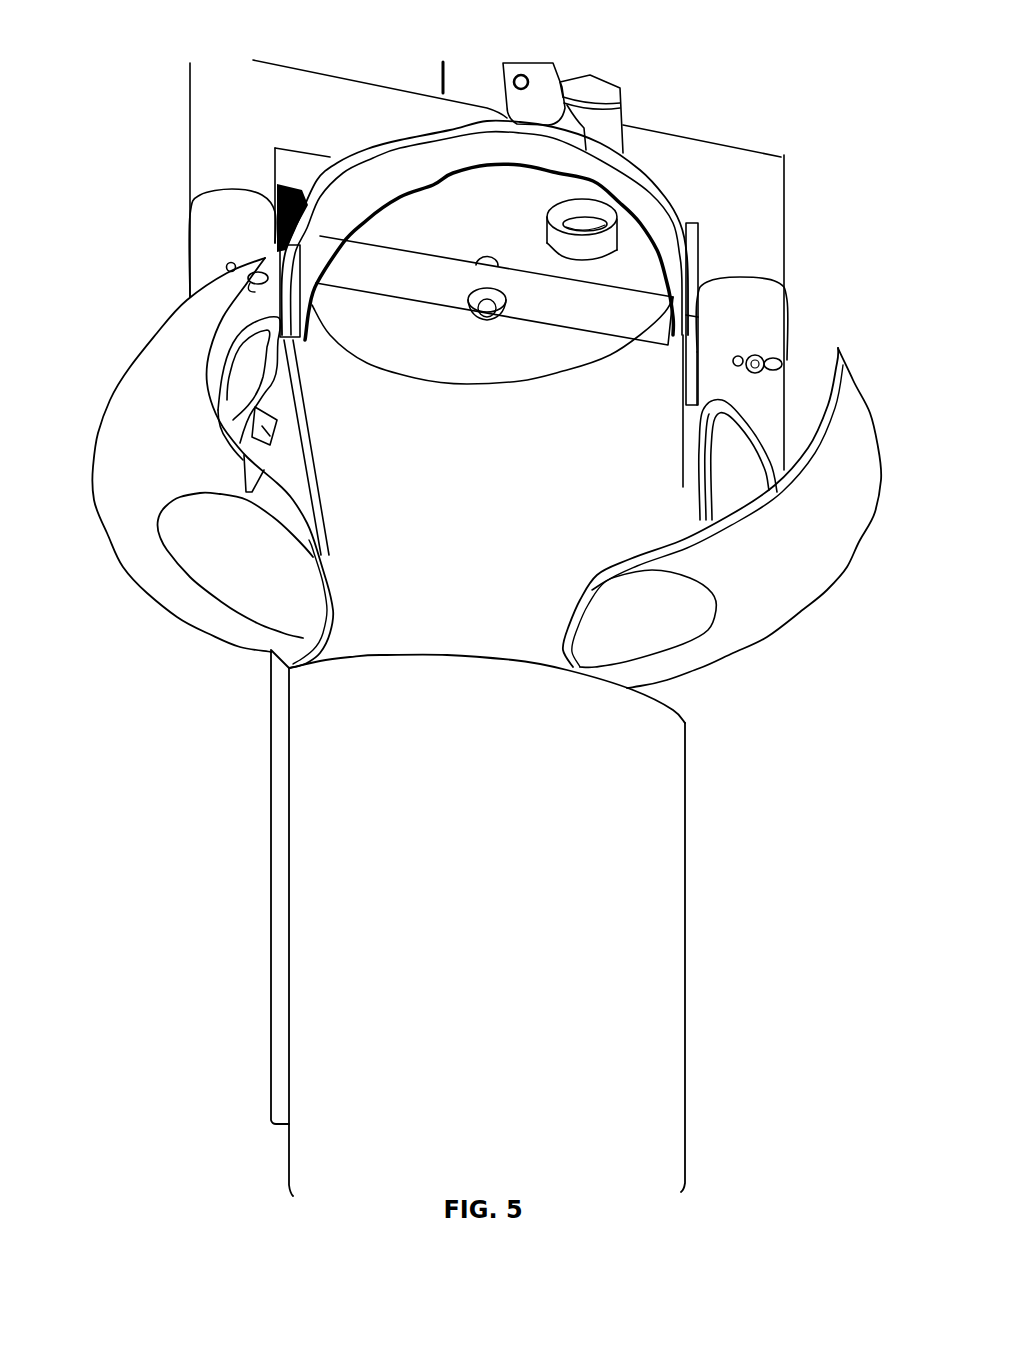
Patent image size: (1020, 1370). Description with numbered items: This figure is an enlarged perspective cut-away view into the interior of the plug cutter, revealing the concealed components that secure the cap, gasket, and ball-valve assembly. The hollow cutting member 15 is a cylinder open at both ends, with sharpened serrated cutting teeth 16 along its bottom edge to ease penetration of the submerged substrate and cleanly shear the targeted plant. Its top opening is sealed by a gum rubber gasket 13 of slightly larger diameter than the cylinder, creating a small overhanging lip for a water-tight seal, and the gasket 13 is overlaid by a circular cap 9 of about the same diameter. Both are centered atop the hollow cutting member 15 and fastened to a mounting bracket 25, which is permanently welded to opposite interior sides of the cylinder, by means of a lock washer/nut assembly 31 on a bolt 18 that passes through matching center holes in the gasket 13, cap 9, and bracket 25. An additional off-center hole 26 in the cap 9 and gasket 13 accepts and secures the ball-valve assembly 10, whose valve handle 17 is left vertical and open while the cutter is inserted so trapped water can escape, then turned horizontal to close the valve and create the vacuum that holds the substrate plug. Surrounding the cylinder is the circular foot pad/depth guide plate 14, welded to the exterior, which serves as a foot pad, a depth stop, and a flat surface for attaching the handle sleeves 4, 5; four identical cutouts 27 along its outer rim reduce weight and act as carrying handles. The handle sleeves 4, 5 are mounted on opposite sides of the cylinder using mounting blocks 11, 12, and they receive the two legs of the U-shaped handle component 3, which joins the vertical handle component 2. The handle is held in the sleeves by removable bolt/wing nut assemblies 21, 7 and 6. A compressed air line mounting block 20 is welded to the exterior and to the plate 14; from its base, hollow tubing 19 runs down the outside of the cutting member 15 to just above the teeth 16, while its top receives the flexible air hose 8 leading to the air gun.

The handle component 2 is at (468, 77).
The U-shaped handle component 3 is at (223, 160).
The handle sleeve 4 is at (770, 310).
The handle sleeve 5 is at (203, 212).
The bolt/wing nut assembly 6 is at (833, 407).
The bolt/wing nut assembly 7 is at (229, 266).
The flexible air hose 8 is at (282, 365).
The circular cap 9 is at (643, 170).
The ball-valve assembly 10 is at (607, 133).
The mounting block 11 is at (290, 277).
The mounting block 12 is at (693, 360).
The gum rubber gasket 13 is at (667, 198).
The circular foot pad/depth guide plate 14 is at (135, 428).
The hollow cutting member 15 is at (513, 925).
The serrated cutting teeth 16 is at (674, 957).
The valve handle 17 is at (537, 65).
The bolt 18 is at (487, 260).
The hollow tubing 19 is at (283, 835).
The compressed air line mounting block 20 is at (309, 464).
The bolt/wing nut assembly 21 is at (795, 437).
The mounting bracket 25 is at (623, 323).
The hole 26 is at (583, 240).
The cutout 27 is at (257, 567).
The lock washer/nut assembly 31 is at (467, 310).